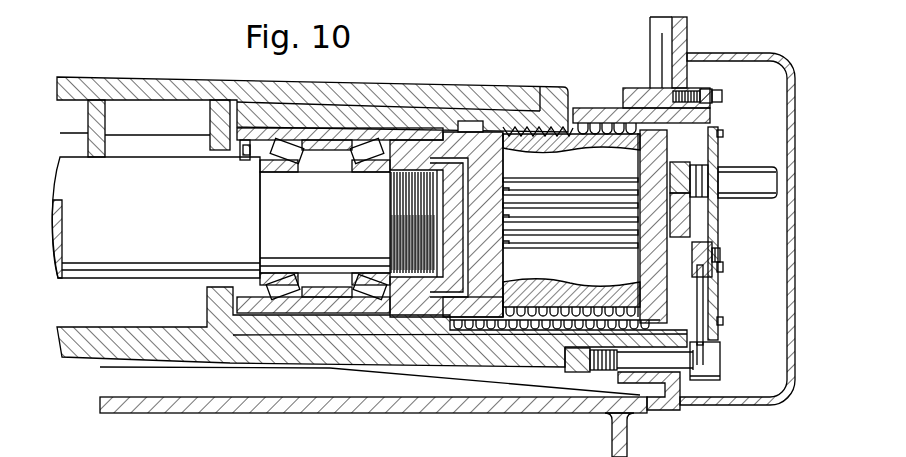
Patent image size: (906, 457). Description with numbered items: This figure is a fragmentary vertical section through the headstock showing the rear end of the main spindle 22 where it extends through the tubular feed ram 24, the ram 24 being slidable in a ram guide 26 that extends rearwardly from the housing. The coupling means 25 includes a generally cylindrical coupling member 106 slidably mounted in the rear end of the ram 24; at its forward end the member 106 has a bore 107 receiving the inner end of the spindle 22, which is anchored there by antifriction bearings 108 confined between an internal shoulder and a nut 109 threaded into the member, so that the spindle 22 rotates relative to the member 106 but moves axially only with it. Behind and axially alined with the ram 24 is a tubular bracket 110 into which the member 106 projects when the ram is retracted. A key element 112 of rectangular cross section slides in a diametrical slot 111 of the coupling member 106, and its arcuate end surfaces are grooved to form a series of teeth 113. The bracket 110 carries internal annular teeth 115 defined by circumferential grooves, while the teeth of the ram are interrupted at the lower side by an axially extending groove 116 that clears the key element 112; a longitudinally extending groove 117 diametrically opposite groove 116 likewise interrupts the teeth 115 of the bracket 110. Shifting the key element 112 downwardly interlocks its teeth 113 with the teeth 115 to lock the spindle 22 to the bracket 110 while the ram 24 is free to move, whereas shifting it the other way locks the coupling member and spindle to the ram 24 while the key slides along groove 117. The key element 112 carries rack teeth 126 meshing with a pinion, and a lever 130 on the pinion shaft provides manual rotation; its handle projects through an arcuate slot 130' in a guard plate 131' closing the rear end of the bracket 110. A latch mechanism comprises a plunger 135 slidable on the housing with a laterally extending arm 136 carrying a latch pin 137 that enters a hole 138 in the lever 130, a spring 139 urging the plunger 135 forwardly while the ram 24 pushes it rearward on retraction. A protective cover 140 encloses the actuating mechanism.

The main spindle 22 is at (60, 166).
The tubular feed ram 24 is at (111, 85).
The coupling means 25 is at (517, 114).
The ram guide 26 is at (433, 410).
The coupling member 106 is at (416, 138).
The bore 107 is at (325, 138).
The antifriction bearings 108 is at (285, 162).
The nut 109 is at (248, 158).
The tubular bracket 110 is at (608, 110).
The diametrical slot 111 is at (504, 213).
The key element 112 is at (520, 163).
The teeth 113 is at (579, 137).
The teeth 115 is at (648, 322).
The axially extending groove 116 is at (485, 323).
The longitudinally extending groove 117 is at (655, 129).
The rack teeth 126 is at (516, 244).
The lever 130 is at (671, 181).
The arcuate slot 130' is at (747, 169).
The guard plate 131' is at (741, 233).
The plunger 135 is at (582, 358).
The laterally extending arm 136 is at (703, 305).
The latch pin 137 is at (712, 242).
The hole 138 is at (683, 210).
The spring 139 is at (613, 372).
The protective cover 140 is at (752, 408).